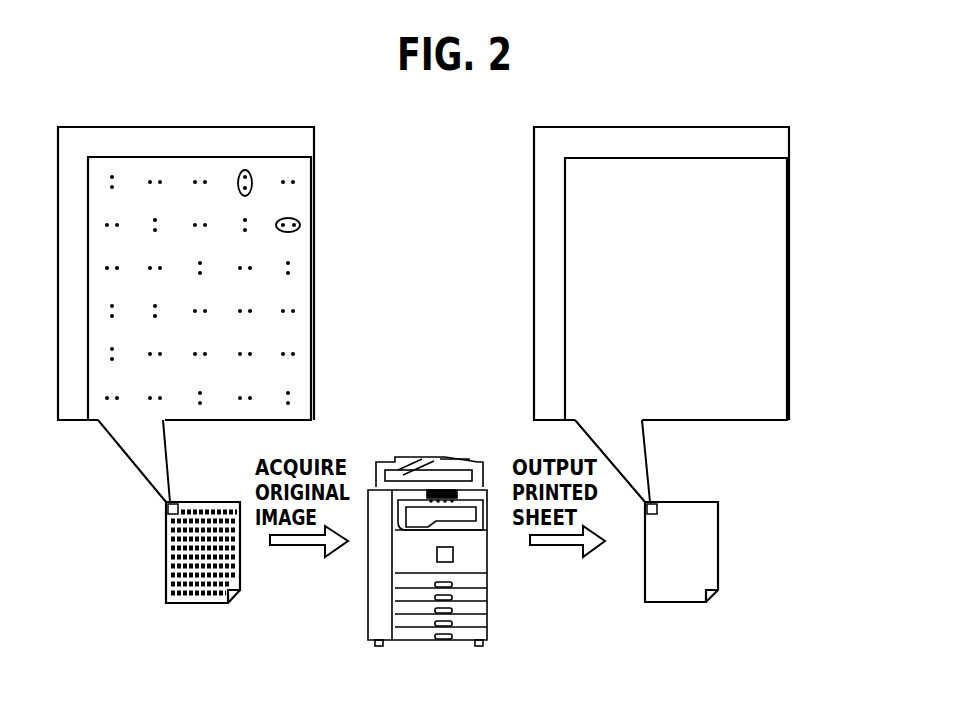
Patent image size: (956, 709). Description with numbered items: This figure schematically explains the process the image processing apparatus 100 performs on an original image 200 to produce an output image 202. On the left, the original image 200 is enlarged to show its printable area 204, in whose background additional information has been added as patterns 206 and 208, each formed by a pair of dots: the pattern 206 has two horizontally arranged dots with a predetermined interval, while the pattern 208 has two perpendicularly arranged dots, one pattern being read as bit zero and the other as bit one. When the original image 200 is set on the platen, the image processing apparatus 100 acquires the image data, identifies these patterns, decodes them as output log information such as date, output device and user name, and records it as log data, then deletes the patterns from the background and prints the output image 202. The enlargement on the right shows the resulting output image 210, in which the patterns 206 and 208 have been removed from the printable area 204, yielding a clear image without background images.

The image processing apparatus 100 is at (487, 567).
The original image 200 is at (240, 565).
The output image 202 is at (718, 565).
The printable area 204 is at (314, 323).
The pattern 206 is at (300, 224).
The pattern 208 is at (246, 170).
The output image 210 is at (789, 275).